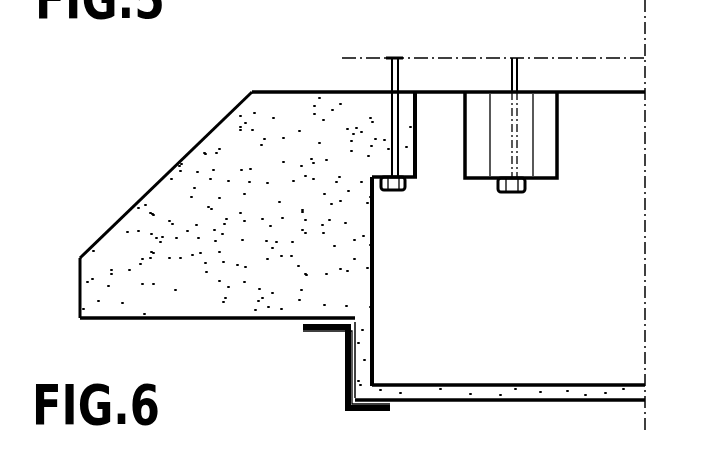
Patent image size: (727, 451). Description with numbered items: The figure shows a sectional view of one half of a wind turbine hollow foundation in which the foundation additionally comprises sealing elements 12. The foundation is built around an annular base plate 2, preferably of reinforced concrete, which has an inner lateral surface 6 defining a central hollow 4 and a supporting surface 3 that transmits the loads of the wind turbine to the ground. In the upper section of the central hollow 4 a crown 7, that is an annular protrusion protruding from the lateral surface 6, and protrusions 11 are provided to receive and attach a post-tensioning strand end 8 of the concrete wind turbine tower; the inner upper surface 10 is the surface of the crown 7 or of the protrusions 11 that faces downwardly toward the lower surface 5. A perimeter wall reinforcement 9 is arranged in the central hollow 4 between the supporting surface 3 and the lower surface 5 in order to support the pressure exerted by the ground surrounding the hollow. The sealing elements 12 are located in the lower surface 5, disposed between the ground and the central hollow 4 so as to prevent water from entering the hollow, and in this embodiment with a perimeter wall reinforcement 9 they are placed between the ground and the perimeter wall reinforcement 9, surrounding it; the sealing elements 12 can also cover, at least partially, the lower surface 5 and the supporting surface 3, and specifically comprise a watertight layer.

The annular base plate 2 is at (258, 219).
The supporting surface 3 is at (217, 319).
The central hollow 4 is at (556, 287).
The lower surface 5 is at (493, 393).
The inner lateral surface 6 is at (374, 247).
The crown 7 is at (300, 112).
The post-tensioning strand end 8 is at (512, 78).
The perimeter wall reinforcement 9 is at (374, 348).
The inner upper surface 10 is at (410, 183).
The protrusions 11 is at (418, 145).
The sealing elements 12 is at (345, 363).